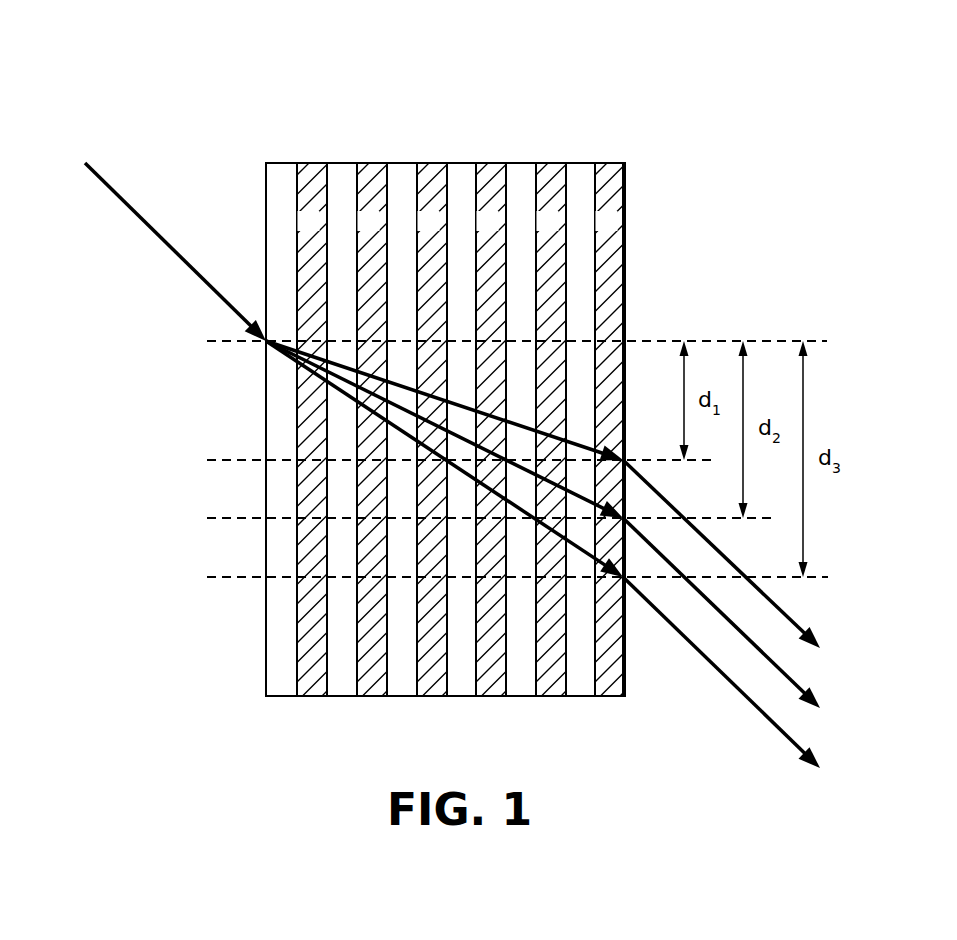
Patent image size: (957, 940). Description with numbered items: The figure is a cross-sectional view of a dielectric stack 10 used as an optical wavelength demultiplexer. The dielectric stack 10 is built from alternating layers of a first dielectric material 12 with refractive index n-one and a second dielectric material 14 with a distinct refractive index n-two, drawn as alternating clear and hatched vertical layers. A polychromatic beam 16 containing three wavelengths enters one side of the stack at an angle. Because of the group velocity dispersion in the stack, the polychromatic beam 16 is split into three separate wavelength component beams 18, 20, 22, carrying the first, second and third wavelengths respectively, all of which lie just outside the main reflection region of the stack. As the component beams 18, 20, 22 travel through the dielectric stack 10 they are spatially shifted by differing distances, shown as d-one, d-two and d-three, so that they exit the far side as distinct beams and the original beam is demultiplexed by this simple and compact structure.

The dielectric stack 10 is at (460, 72).
The first dielectric material 12 is at (265, 180).
The second dielectric material 14 is at (624, 177).
The polychromatic beam 16 is at (145, 220).
The wavelength component beam 18 is at (797, 623).
The wavelength component beam 20 is at (797, 683).
The wavelength component beam 22 is at (797, 743).